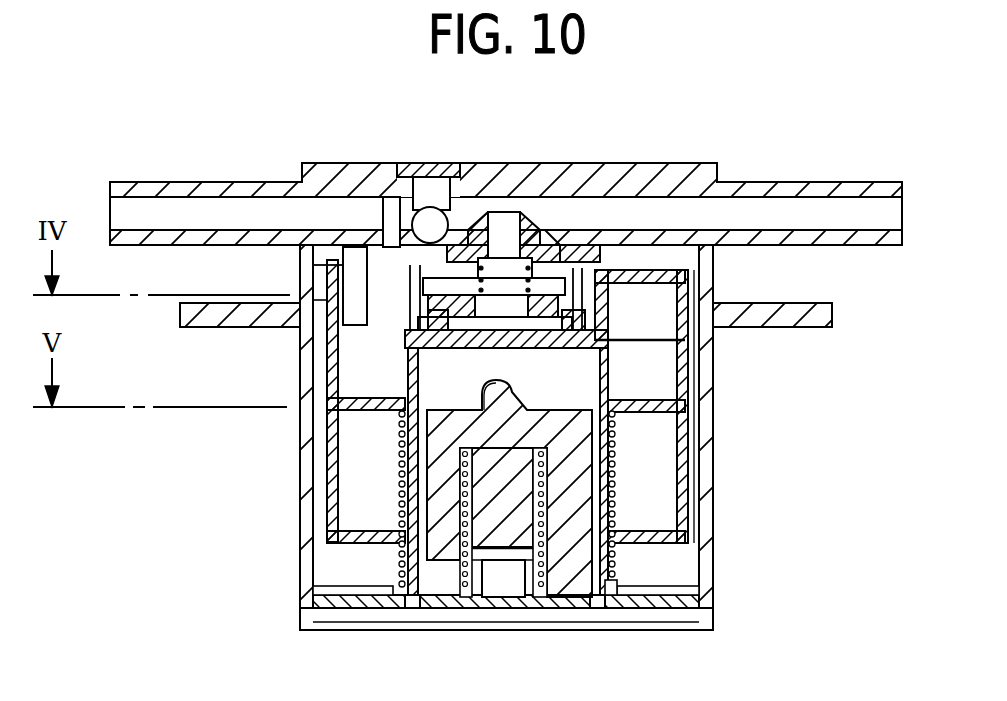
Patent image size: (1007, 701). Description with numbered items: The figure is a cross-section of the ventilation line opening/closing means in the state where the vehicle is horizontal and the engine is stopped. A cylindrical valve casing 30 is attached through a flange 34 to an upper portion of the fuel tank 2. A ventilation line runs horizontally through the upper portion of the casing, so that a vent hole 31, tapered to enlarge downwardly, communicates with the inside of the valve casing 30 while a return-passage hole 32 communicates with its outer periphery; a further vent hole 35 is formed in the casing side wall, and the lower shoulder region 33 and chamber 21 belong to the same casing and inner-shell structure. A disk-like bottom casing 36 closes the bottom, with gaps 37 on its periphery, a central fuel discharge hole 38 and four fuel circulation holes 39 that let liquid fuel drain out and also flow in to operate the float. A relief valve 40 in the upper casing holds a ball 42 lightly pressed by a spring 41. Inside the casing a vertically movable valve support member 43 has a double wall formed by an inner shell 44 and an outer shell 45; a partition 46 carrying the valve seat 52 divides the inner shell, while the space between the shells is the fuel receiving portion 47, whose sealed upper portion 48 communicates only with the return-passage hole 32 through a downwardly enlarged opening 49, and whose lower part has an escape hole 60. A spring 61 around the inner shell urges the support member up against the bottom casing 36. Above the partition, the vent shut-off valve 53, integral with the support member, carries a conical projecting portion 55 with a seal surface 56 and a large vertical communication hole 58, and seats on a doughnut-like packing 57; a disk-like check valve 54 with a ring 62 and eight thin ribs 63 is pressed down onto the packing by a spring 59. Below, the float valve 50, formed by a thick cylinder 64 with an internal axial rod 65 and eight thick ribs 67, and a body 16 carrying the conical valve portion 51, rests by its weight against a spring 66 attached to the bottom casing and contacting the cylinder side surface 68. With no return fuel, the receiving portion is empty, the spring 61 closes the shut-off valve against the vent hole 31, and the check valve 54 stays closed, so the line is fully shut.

The fuel tank 2 is at (227, 467).
The piston 16 is at (523, 395).
The valve member 21 is at (597, 298).
The valve casing 30 is at (550, 176).
The vent hole 31 is at (598, 200).
The return-passage hole 32 is at (163, 200).
The plate body 33 is at (518, 186).
The flange 34 is at (180, 316).
The vent hole 35 is at (712, 368).
The bottom casing 36 is at (332, 603).
The gaps 37 is at (700, 605).
The fuel discharge hole 38 is at (503, 608).
The fuel circulation holes 39 is at (416, 606).
The relief valve 40 is at (430, 185).
The spring 41 is at (403, 190).
The ball 42 is at (453, 208).
The valve support member 43 is at (330, 357).
The inner shell 44 is at (685, 405).
The outer shell 45 is at (690, 477).
The partition 46 is at (595, 362).
The fuel receiving portion 47 is at (340, 382).
The upper portion 48 is at (333, 277).
The opening 49 is at (343, 302).
The float valve 50 is at (608, 563).
The valve portion 51 is at (516, 398).
The valve seat 52 is at (482, 355).
The vent shut-off valve 53 is at (428, 265).
The check valve 54 is at (568, 266).
The conical projecting portion 55 is at (570, 258).
The seal surface 56 is at (553, 225).
The packing 57 is at (692, 338).
The vertical communication hole 58 is at (497, 212).
The spring 59 is at (433, 298).
The escape hole 60 is at (350, 410).
The spring 61 is at (617, 518).
The ring 62 is at (425, 328).
The thin ribs 63 is at (590, 317).
The thick cylinder 64 is at (447, 597).
The axial rod 65 is at (528, 558).
The spring 66 is at (458, 566).
The thick ribs 67 is at (398, 515).
The side surface 68 is at (548, 478).